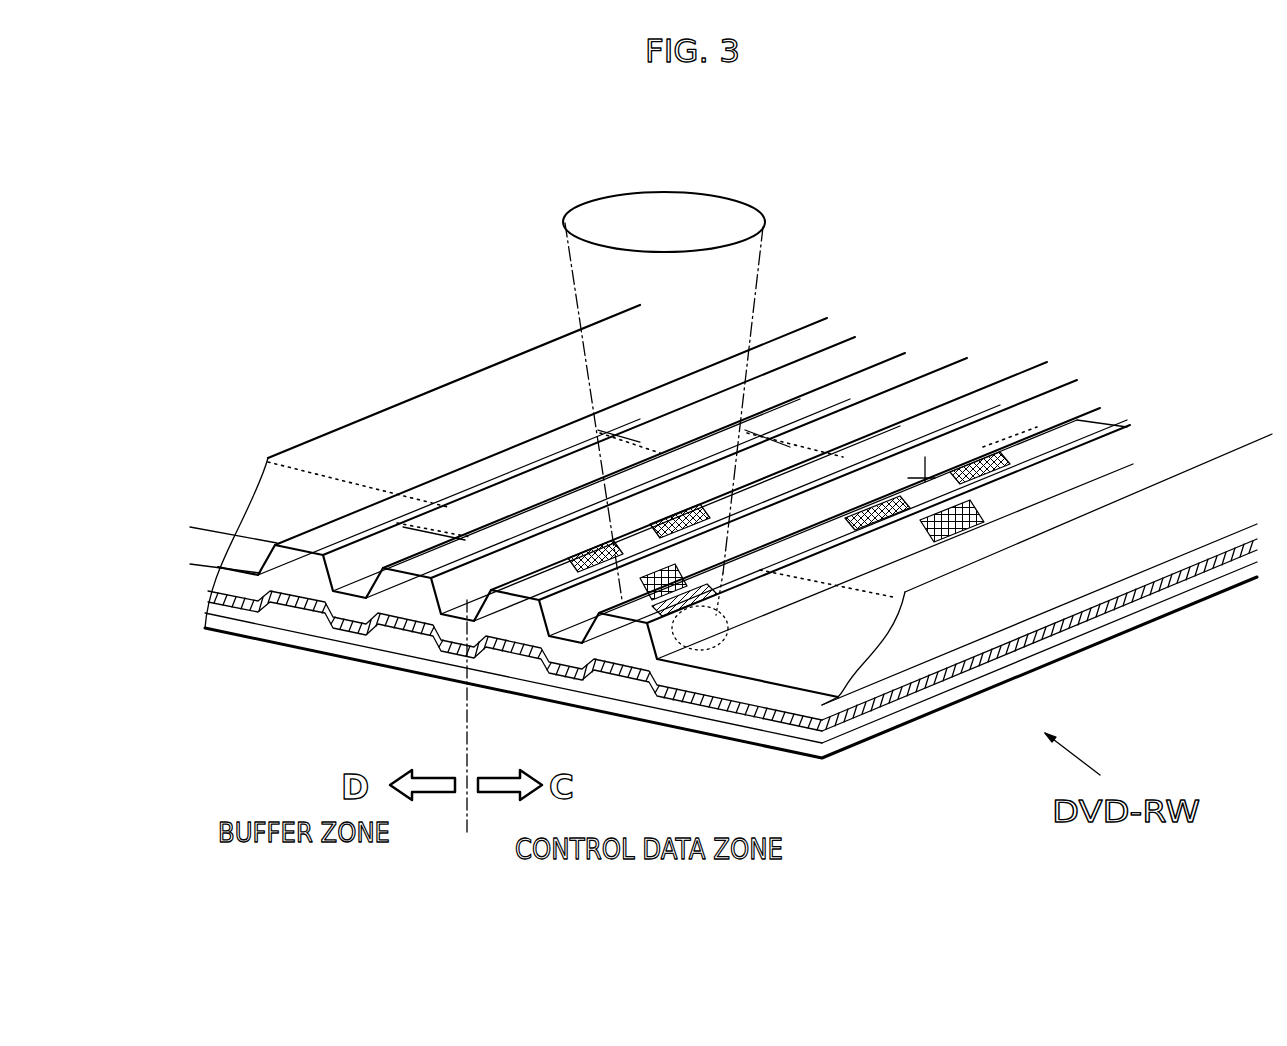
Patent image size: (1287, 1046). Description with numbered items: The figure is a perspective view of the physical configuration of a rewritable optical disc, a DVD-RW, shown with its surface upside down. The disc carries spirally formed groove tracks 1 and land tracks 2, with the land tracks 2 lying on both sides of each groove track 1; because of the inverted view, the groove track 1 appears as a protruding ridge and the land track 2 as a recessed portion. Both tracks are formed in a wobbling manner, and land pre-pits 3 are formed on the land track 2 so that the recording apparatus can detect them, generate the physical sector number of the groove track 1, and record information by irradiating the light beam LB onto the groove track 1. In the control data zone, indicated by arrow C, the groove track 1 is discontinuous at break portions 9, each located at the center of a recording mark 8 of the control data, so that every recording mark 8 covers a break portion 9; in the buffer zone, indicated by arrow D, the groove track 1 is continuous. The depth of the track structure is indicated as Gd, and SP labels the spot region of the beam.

The groove track 1 is at (1055, 450).
The land track 2 is at (468, 608).
The land pre-pit 3 is at (783, 447).
The recording mark 8 is at (1007, 483).
The break portion 9 is at (958, 545).
The substrate SP is at (700, 630).
The light beam LB is at (567, 255).
The groove depth Gd is at (196, 492).